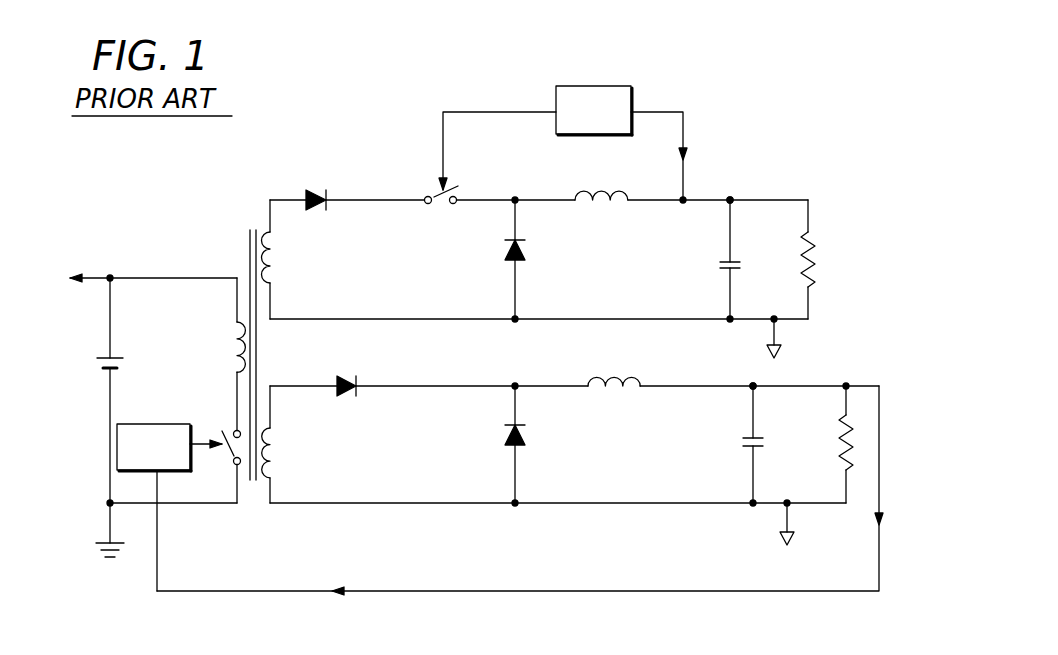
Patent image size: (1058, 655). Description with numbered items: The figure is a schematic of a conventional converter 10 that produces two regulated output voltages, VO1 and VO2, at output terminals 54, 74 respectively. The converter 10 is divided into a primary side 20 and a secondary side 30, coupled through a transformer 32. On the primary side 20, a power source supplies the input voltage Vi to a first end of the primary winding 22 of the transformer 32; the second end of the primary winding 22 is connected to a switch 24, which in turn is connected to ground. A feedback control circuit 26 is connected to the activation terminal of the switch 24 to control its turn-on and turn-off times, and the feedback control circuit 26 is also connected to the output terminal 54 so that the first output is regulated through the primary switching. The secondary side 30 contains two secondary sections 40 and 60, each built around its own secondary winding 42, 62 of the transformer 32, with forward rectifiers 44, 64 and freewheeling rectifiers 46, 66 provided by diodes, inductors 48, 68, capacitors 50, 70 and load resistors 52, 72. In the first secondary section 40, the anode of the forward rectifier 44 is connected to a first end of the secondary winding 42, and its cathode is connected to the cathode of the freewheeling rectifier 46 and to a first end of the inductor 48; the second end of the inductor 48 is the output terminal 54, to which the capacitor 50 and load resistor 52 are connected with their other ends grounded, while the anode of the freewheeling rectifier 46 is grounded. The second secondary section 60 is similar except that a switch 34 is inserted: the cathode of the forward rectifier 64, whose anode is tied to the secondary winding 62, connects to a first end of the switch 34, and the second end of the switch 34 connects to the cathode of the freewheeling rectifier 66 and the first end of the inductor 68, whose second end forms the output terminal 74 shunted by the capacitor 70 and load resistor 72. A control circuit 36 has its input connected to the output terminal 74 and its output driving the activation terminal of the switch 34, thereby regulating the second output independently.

The converter 10 is at (712, 70).
The primary side 20 is at (144, 278).
The primary winding 22 is at (232, 324).
The switch 24 is at (233, 422).
The feedback control circuit 26 is at (165, 424).
The secondary side 30 is at (488, 530).
The transformer 32 is at (243, 246).
The switch 34 is at (428, 192).
The control circuit 36 is at (587, 86).
The first secondary section 40 is at (643, 505).
The secondary winding 42 is at (276, 430).
The forward rectifier 44 is at (362, 384).
The freewheeling rectifier 46 is at (502, 430).
The inductor 48 is at (618, 398).
The capacitor 50 is at (736, 442).
The load resistor 52 is at (830, 440).
The output terminal 54 is at (745, 388).
The second secondary section 60 is at (356, 202).
The secondary winding 62 is at (278, 280).
The forward rectifier 64 is at (306, 190).
The freewheeling rectifier 66 is at (502, 250).
The inductor 68 is at (612, 202).
The capacitor 70 is at (718, 265).
The load resistor 72 is at (822, 256).
The output terminal 74 is at (730, 198).